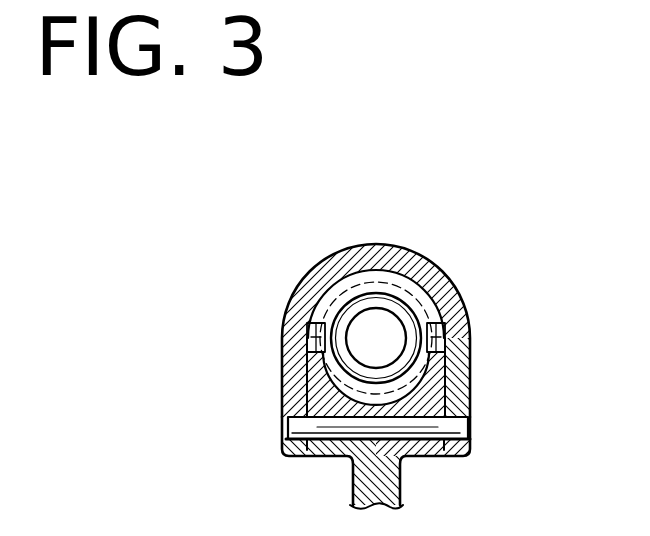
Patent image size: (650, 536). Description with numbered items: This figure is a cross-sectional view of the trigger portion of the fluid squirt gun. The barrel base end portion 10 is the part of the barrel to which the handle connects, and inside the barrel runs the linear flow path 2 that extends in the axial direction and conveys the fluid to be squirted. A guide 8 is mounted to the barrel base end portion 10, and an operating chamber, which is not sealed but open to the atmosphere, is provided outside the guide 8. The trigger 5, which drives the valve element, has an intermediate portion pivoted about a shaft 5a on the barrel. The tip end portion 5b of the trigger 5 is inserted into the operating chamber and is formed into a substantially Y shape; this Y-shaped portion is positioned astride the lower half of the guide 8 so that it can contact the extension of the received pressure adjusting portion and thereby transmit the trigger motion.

The flow path 2 is at (380, 338).
The trigger 5 is at (372, 485).
The shaft 5a is at (436, 423).
The tip end portion 5b is at (307, 379).
The guide 8 is at (384, 297).
The barrel base end portion 10 is at (453, 288).